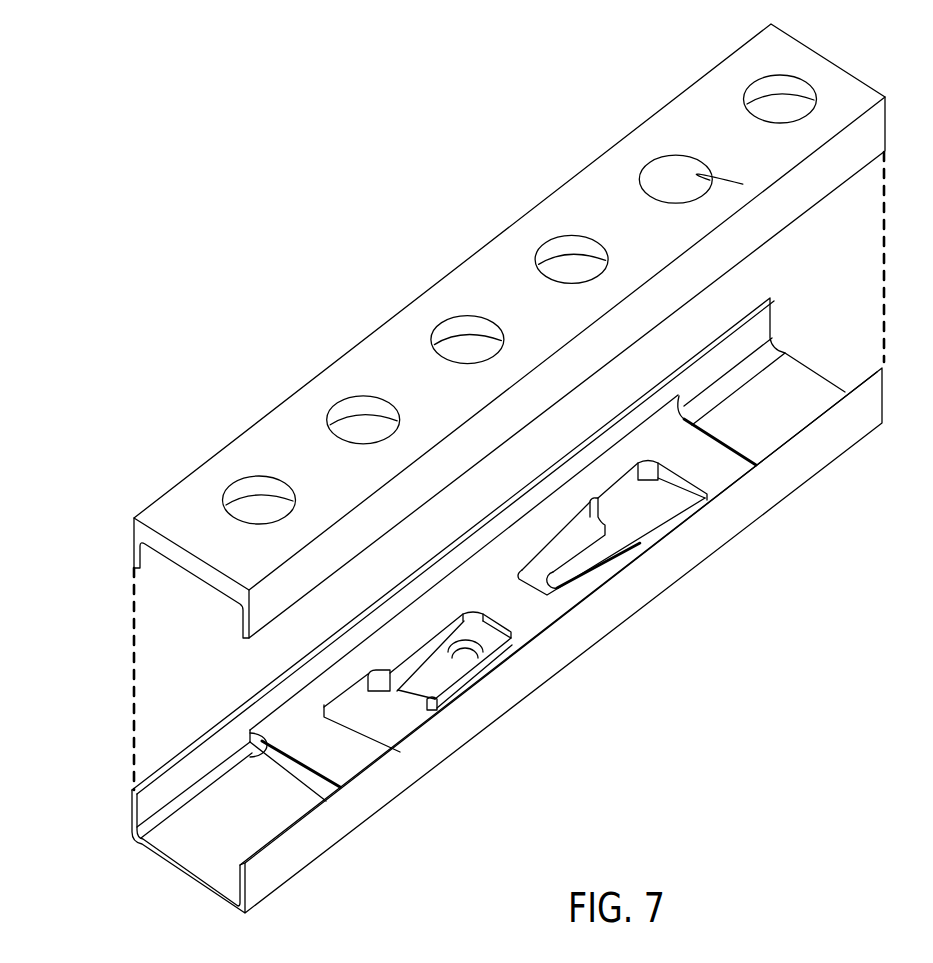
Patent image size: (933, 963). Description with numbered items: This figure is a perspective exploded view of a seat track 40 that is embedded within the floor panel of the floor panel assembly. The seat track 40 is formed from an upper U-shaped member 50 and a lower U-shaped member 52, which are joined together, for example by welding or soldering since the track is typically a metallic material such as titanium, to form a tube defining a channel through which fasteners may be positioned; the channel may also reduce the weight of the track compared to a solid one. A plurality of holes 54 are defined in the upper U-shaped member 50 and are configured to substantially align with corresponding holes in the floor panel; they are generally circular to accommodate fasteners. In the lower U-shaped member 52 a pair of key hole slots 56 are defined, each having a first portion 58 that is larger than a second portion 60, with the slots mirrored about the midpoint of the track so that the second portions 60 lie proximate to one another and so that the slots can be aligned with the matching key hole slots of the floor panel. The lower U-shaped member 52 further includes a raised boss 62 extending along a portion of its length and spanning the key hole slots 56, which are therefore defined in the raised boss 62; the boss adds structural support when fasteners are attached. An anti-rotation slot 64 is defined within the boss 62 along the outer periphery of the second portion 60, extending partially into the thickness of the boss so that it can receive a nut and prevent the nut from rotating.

The seat track 40 is at (109, 691).
The upper U-shaped member 50 is at (183, 505).
The lower U-shaped member 52 is at (287, 860).
The holes 54 is at (355, 424).
The key hole slots 56 is at (648, 516).
The first portion 58 is at (484, 719).
The second portion 60 is at (445, 668).
The raised boss 62 is at (340, 762).
The anti-rotation slot 64 is at (488, 640).